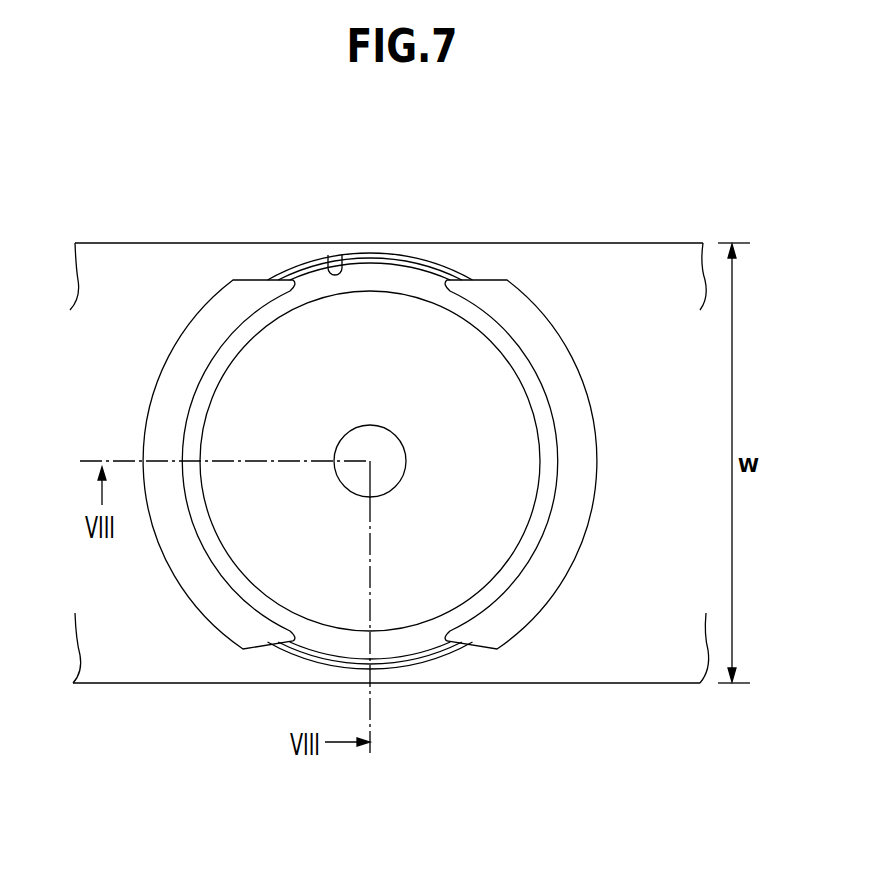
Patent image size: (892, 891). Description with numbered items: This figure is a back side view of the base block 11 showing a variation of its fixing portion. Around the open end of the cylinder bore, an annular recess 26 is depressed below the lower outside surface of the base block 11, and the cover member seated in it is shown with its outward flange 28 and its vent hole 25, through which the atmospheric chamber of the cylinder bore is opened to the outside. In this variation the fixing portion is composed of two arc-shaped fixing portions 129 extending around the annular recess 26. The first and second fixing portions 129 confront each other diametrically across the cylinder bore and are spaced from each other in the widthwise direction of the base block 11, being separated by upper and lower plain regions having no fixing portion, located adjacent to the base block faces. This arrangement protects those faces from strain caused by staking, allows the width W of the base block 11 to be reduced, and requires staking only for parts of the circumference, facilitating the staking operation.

The base block 11 is at (182, 653).
The vent hole 25 is at (394, 478).
The annular recess 26 is at (327, 268).
The outward flange 28 is at (393, 275).
The arc-shaped fixing portions 129 is at (170, 408).